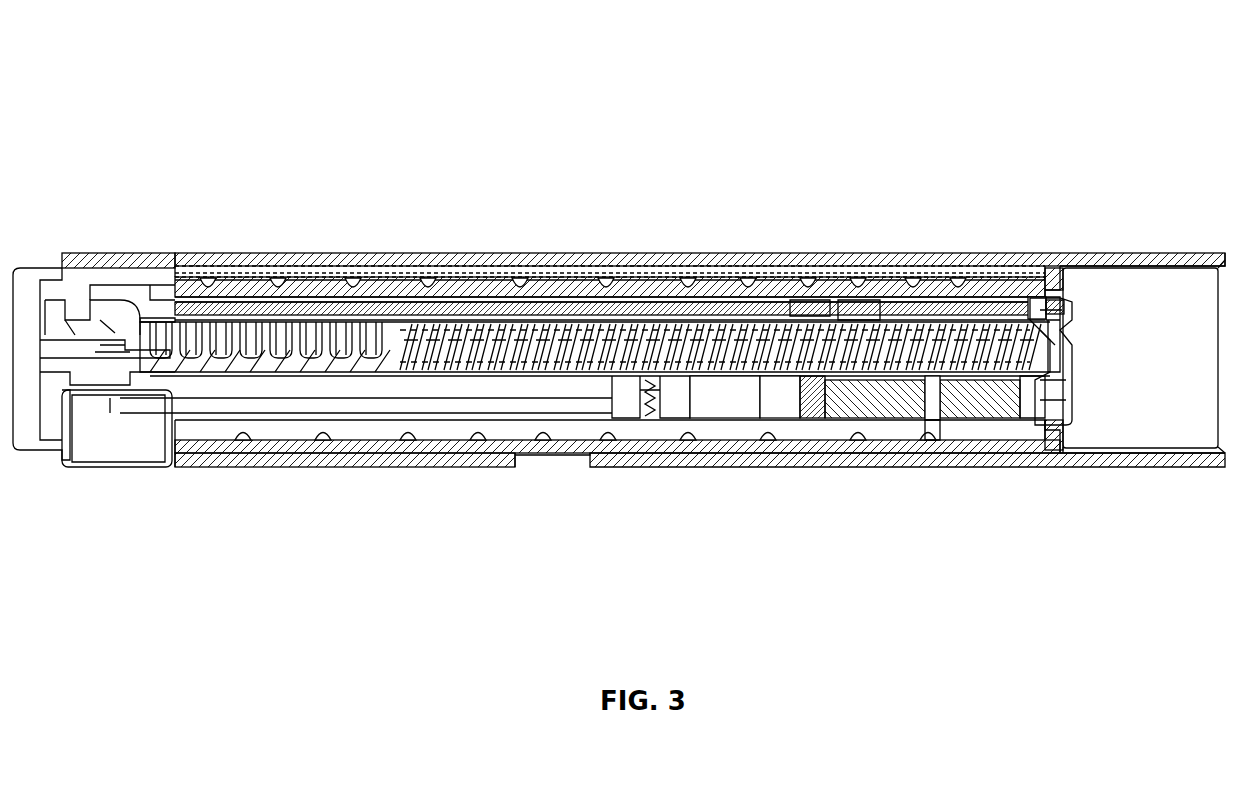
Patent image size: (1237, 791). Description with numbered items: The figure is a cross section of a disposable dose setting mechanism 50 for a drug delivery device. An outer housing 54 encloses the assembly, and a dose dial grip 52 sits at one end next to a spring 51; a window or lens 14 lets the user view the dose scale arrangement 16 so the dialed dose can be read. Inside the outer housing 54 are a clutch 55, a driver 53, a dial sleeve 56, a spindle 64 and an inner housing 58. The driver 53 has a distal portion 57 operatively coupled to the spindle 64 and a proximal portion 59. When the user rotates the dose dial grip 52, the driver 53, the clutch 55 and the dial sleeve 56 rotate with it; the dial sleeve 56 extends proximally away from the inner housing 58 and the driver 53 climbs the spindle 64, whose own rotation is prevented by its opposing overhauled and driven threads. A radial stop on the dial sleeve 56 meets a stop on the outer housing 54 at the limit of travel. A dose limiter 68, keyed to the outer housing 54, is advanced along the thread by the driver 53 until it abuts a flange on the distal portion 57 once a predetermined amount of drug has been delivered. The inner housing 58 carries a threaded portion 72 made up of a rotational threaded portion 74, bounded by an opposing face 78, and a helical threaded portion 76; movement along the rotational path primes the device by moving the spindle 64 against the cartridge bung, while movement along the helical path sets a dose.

The window or lens 14 is at (547, 522).
The dose scale arrangement 16 is at (527, 468).
The disposable dose setting mechanism 50 is at (662, 52).
The spring 51 is at (820, 268).
The dose dial grip 52 is at (108, 253).
The driver 53 is at (694, 220).
The outer housing 54 is at (425, 253).
The clutch 55 is at (318, 268).
The dial sleeve 56 is at (268, 258).
The distal portion 57 is at (1062, 270).
The inner housing 58 is at (1032, 266).
The proximal portion 59 is at (357, 266).
The spindle 64 is at (1075, 340).
The dose limiter 68 is at (938, 440).
The threaded portion 72 is at (530, 266).
The rotational threaded portion 74 is at (610, 268).
The helical threaded portion 76 is at (865, 262).
The opposing face 78 is at (965, 262).